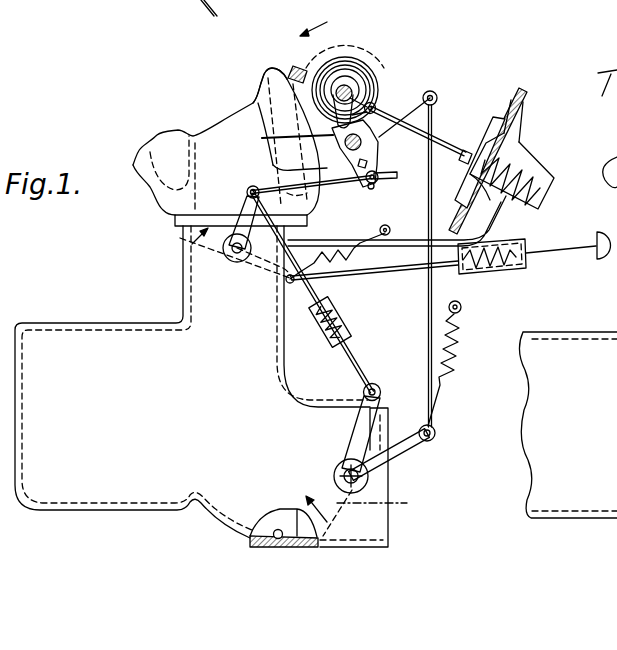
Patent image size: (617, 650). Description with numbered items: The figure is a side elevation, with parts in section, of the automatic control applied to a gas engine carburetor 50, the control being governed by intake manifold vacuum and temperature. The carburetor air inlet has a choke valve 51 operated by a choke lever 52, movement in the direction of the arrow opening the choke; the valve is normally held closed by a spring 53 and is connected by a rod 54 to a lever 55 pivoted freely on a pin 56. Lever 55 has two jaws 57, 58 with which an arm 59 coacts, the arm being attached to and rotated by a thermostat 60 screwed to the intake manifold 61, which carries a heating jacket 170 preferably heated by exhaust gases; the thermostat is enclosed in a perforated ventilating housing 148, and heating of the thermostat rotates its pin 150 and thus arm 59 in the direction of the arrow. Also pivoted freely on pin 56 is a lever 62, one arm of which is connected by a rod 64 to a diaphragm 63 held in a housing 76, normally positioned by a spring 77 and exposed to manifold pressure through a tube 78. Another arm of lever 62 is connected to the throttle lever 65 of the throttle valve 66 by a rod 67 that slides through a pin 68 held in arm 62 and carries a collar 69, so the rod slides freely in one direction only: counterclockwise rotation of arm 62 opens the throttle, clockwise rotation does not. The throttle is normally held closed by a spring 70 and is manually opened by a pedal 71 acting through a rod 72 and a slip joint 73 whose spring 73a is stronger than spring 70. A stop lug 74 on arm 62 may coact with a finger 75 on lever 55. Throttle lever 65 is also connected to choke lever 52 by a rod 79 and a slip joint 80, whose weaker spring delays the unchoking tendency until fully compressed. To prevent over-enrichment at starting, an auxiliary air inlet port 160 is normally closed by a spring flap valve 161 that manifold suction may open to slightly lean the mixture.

The carburetor 50 is at (192, 382).
The choke valve 51 is at (400, 506).
The choke lever 52 is at (405, 458).
The spring 53 is at (452, 340).
The rod 54 is at (427, 323).
The lever 55 is at (432, 90).
The pin 56 is at (380, 152).
The jaw 57 is at (274, 130).
The jaw 58 is at (366, 142).
The arm 59 is at (372, 100).
The thermostat 60 is at (348, 80).
The intake manifold 61 is at (198, 128).
The lever 62 is at (380, 108).
The diaphragm 63 is at (490, 120).
The rod 64 is at (455, 134).
The throttle lever 65 is at (246, 197).
The throttle valve 66 is at (192, 262).
The rod 67 is at (330, 184).
The pin 68 is at (372, 184).
The collar 69 is at (382, 185).
The spring 70 is at (352, 249).
The pedal 71 is at (592, 258).
The rod 72 is at (402, 268).
The slip joint 73 is at (520, 274).
The spring 73a is at (480, 273).
The stop lug 74 is at (398, 176).
The finger 75 is at (278, 167).
The housing 76 is at (518, 135).
The spring 77 is at (533, 170).
The tube 78 is at (323, 242).
The rod 79 is at (322, 287).
The slip joint 80 is at (308, 318).
The housing 148 is at (300, 62).
The pin 150 is at (317, 39).
The auxiliary air inlet port 160 is at (316, 549).
The spring flap valve 161 is at (297, 508).
The heating jacket 170 is at (260, 76).